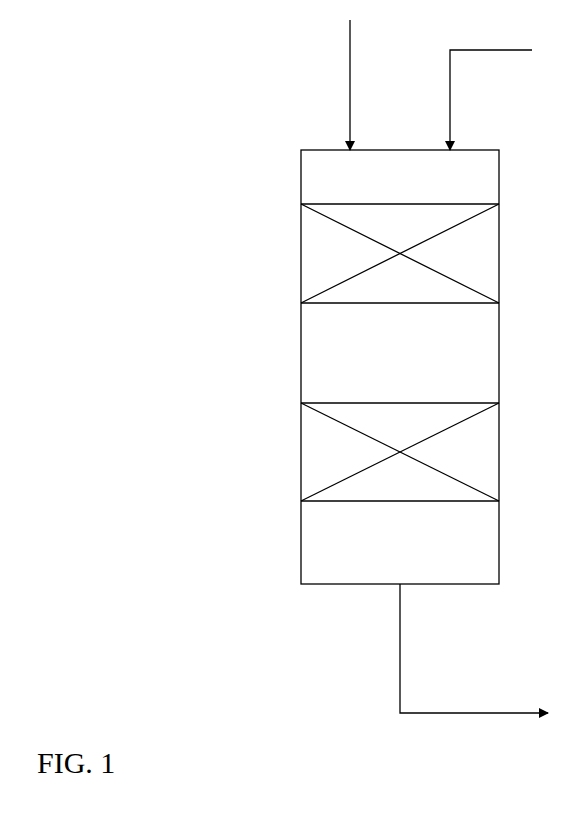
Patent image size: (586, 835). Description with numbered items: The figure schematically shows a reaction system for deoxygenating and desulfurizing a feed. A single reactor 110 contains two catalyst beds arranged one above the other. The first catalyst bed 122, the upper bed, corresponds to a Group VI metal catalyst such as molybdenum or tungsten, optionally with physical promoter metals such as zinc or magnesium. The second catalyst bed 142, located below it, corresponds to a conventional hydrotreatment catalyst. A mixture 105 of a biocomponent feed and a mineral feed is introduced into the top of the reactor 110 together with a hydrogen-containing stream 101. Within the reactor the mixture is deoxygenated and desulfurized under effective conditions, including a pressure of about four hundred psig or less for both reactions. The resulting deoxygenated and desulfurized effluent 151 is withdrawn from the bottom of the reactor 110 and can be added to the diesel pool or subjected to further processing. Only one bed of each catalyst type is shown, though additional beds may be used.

The reactor 110 is at (380, 363).
The first catalyst bed 122 is at (510, 272).
The second catalyst bed 142 is at (510, 466).
The mixture 105 is at (333, 117).
The hydrogen-containing stream 101 is at (457, 118).
The effluent 151 is at (425, 658).